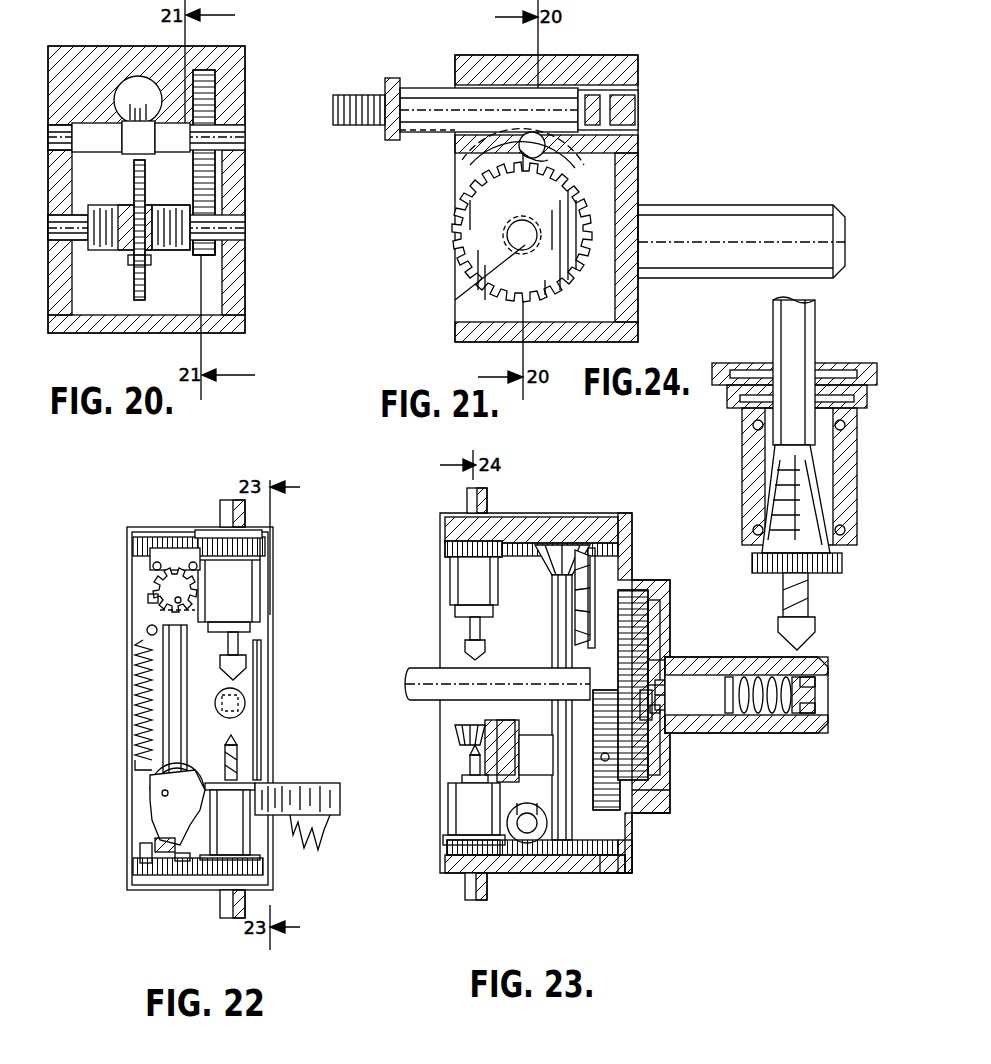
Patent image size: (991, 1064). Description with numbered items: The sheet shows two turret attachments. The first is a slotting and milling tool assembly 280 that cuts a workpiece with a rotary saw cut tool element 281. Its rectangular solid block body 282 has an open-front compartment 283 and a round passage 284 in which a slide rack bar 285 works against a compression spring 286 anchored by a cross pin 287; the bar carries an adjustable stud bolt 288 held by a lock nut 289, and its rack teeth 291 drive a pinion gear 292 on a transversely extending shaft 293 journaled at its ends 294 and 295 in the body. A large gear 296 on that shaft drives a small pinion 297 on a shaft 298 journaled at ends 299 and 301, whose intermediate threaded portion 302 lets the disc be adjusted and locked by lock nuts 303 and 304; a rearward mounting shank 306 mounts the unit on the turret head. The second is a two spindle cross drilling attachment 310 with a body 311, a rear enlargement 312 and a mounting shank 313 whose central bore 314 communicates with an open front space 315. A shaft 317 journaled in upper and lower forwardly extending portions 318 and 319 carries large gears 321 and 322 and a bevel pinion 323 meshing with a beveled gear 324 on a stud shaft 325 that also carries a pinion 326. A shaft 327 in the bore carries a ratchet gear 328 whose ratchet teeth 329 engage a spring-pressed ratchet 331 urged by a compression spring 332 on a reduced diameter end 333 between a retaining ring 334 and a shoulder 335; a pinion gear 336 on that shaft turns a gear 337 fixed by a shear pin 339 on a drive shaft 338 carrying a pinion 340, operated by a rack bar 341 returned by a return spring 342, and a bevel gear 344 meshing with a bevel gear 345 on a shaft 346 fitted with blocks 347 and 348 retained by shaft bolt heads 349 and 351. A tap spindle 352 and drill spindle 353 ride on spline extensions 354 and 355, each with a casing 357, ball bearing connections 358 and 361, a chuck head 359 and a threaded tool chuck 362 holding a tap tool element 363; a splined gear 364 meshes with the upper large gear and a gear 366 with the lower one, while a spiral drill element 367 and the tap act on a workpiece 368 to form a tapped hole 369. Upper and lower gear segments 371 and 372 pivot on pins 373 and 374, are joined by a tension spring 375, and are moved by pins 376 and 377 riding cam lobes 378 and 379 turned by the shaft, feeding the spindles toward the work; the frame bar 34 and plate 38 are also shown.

In FIG. 20, the tool assembly 280 is at (252, 82).
In FIG. 21, the tool assembly 280 is at (640, 174).
In FIG. 20, the rotary saw cut tool element 281 is at (135, 280).
In FIG. 21, the rotary saw cut tool element 281 is at (468, 245).
In FIG. 20, the solid block body 282 is at (100, 62).
In FIG. 21, the solid block body 282 is at (640, 68).
In FIG. 20, the compartment 283 is at (70, 262).
In FIG. 21, the compartment 283 is at (468, 305).
In FIG. 20, the longitudinal extending passage 284 is at (138, 85).
In FIG. 21, the longitudinal extending passage 284 is at (628, 128).
In FIG. 21, the slide rack bar 285 is at (428, 95).
In FIG. 21, the compression spring 286 is at (625, 100).
In FIG. 21, the cross pin 287 is at (615, 110).
In FIG. 21, the stud bolt 288 is at (355, 98).
In FIG. 21, the lock nut 289 is at (392, 138).
In FIG. 21, the rack teeth 291 is at (450, 133).
In FIG. 20, the pinion gear 292 is at (133, 147).
In FIG. 21, the pinion gear 292 is at (540, 160).
In FIG. 20, the transversely extending shaft 293 is at (168, 150).
In FIG. 21, the transversely extending shaft 293 is at (527, 152).
In FIG. 20, the shaft end 294 is at (52, 138).
In FIG. 20, the shaft end 295 is at (240, 135).
In FIG. 20, the large gear 296 is at (210, 182).
In FIG. 21, the large gear 296 is at (475, 182).
In FIG. 20, the small pinion 297 is at (215, 255).
In FIG. 21, the small pinion 297 is at (455, 300).
In FIG. 20, the shaft 298 is at (115, 215).
In FIG. 21, the shaft 298 is at (510, 236).
In FIG. 20, the shaft end 299 is at (55, 228).
In FIG. 20, the shaft end 301 is at (243, 228).
In FIG. 20, the intermediate threaded portion 302 is at (165, 246).
In FIG. 20, the lock nut 303 is at (128, 250).
In FIG. 20, the lock nut 304 is at (150, 262).
In FIG. 21, the mounting shank 306 is at (718, 216).
In FIG. 24, the plate 38 is at (832, 365).
In FIG. 24, the spline extension 354 is at (782, 322).
In FIG. 22, the spline extension 354 is at (233, 500).
In FIG. 23, the spline extension 354 is at (488, 500).
In FIG. 24, the casing 357 is at (750, 440).
In FIG. 24, the ball bearing connection 358 is at (752, 428).
In FIG. 24, the chuck head 359 is at (755, 452).
In FIG. 24, the ball bearing connection 361 is at (758, 538).
In FIG. 24, the threaded tool chuck 362 is at (800, 565).
In FIG. 24, the tap tool element 363 is at (815, 630).
In FIG. 22, the tap tool element 363 is at (245, 670).
In FIG. 23, the tap tool element 363 is at (455, 630).
In FIG. 24, the splined gear 364 is at (740, 396).
In FIG. 23, the splined gear 364 is at (450, 548).
In FIG. 22, the cross drilling attachment 310 is at (276, 625).
In FIG. 22, the body 311 is at (268, 670).
In FIG. 23, the body 311 is at (632, 840).
In FIG. 22, the frame bar 34 is at (326, 830).
In FIG. 22, the rack bar 341 is at (300, 790).
In FIG. 23, the rack bar 341 is at (465, 820).
In FIG. 22, the return spring 342 is at (265, 862).
In FIG. 23, the return spring 342 is at (510, 852).
In FIG. 22, the bevel gear 344 is at (150, 770).
In FIG. 23, the bevel gear 344 is at (470, 790).
In FIG. 22, the bevel gear 345 is at (140, 690).
In FIG. 23, the bevel gear 345 is at (462, 730).
In FIG. 22, the shaft 346 is at (170, 700).
In FIG. 22, the block 347 is at (152, 845).
In FIG. 22, the block 348 is at (150, 560).
In FIG. 22, the shaft bolt head 349 is at (182, 862).
In FIG. 22, the shaft bolt head 351 is at (178, 555).
In FIG. 22, the tap spindle 352 is at (240, 590).
In FIG. 23, the tap spindle 352 is at (470, 570).
In FIG. 22, the drill spindle 353 is at (240, 800).
In FIG. 23, the drill spindle 353 is at (455, 812).
In FIG. 22, the spline extension 355 is at (218, 905).
In FIG. 23, the spline extension 355 is at (468, 887).
In FIG. 23, the gear 366 is at (455, 848).
In FIG. 22, the spiral drill element 367 is at (238, 755).
In FIG. 23, the spiral drill element 367 is at (475, 757).
In FIG. 22, the workpiece 368 is at (262, 700).
In FIG. 23, the workpiece 368 is at (420, 685).
In FIG. 22, the tapped hole 369 is at (240, 710).
In FIG. 22, the upper gear segment 371 is at (165, 585).
In FIG. 22, the lower gear segment 372 is at (140, 812).
In FIG. 22, the pin 373 is at (170, 613).
In FIG. 22, the pin 374 is at (160, 792).
In FIG. 22, the tension spring 375 is at (135, 750).
In FIG. 22, the pin 376 is at (155, 598).
In FIG. 22, the pin 377 is at (143, 878).
In FIG. 22, the cam lobe 378 is at (148, 630).
In FIG. 22, the cam lobe 379 is at (148, 782).
In FIG. 23, the enlargement 312 is at (655, 780).
In FIG. 23, the mounting shank 313 is at (720, 722).
In FIG. 23, the central bore 314 is at (772, 722).
In FIG. 23, the open front space 315 is at (460, 745).
In FIG. 23, the shaft 317 is at (560, 590).
In FIG. 23, the upper forwardly extending portion 318 is at (562, 540).
In FIG. 23, the lower forwardly extending portion 319 is at (540, 862).
In FIG. 23, the large gear 321 is at (590, 535).
In FIG. 23, the large gear 322 is at (590, 850).
In FIG. 23, the bevel pinion 323 is at (555, 565).
In FIG. 23, the beveled gear 324 is at (583, 600).
In FIG. 23, the stud shaft 325 is at (592, 620).
In FIG. 23, the pinion 326 is at (635, 612).
In FIG. 23, the shaft 327 is at (665, 700).
In FIG. 23, the ratchet gear 328 is at (650, 625).
In FIG. 23, the ratchet teeth 329 is at (658, 714).
In FIG. 23, the spring-pressed ratchet 331 is at (642, 690).
In FIG. 23, the compression spring 332 is at (762, 678).
In FIG. 23, the reduced diameter end 333 is at (808, 690).
In FIG. 23, the retaining ring 334 is at (805, 705).
In FIG. 23, the shoulder 335 is at (733, 690).
In FIG. 23, the pinion gear 336 is at (607, 700).
In FIG. 23, the gear 337 is at (650, 820).
In FIG. 23, the drive shaft 338 is at (625, 860).
In FIG. 23, the shear pin 339 is at (640, 800).
In FIG. 23, the pinion 340 is at (540, 725).